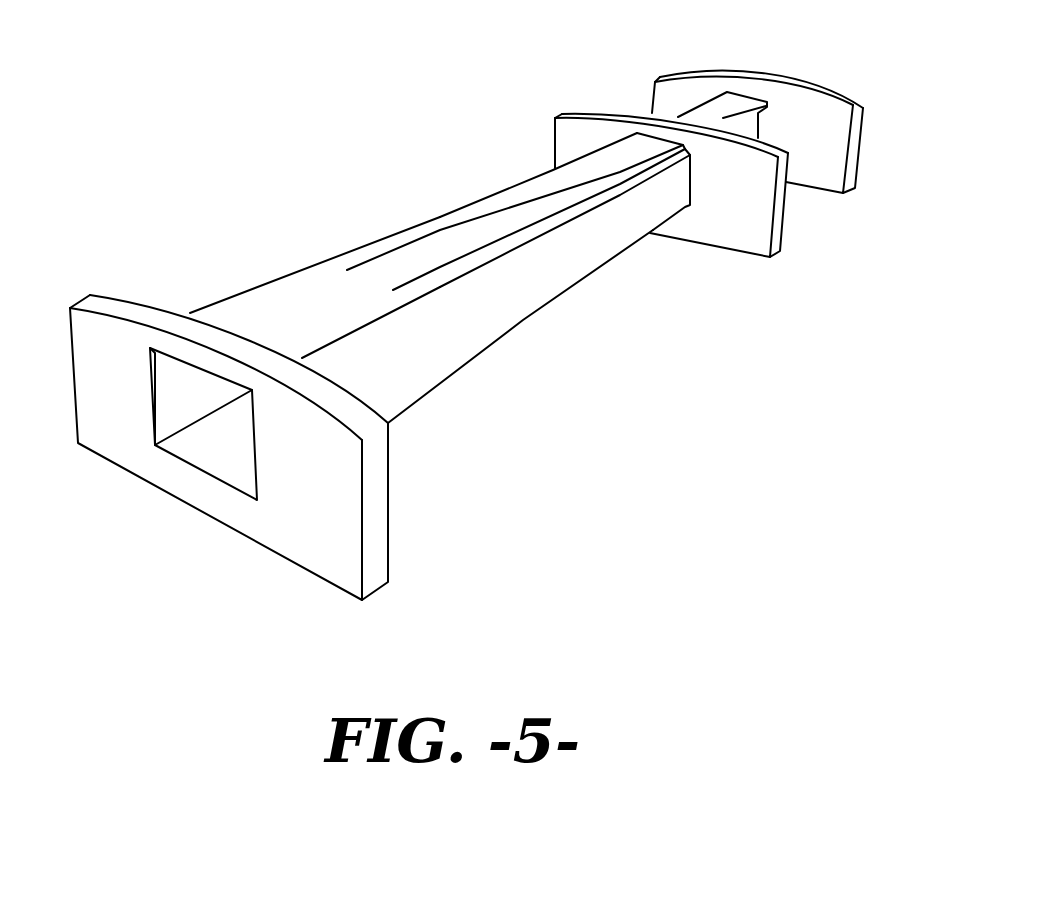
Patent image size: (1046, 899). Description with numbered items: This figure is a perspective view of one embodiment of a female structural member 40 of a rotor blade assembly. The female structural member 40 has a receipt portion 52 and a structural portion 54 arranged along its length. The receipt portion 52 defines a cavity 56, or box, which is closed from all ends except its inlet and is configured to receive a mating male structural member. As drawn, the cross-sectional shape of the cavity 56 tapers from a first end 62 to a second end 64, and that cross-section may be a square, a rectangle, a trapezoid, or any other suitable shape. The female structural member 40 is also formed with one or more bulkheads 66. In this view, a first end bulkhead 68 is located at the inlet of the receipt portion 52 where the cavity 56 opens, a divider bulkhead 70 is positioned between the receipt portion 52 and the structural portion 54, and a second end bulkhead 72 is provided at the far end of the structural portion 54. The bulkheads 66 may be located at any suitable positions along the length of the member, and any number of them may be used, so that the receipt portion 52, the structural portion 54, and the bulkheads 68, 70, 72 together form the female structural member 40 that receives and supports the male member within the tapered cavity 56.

The female structural member 40 is at (464, 328).
The receipt portion 52 is at (440, 297).
The structural portion 54 is at (712, 90).
The cavity 56 is at (225, 450).
The first end 62 is at (313, 317).
The second end 64 is at (672, 192).
The bulkheads 66 is at (464, 338).
The first end bulkhead 68 is at (208, 447).
The divider bulkhead 70 is at (728, 225).
The second end bulkhead 72 is at (800, 108).